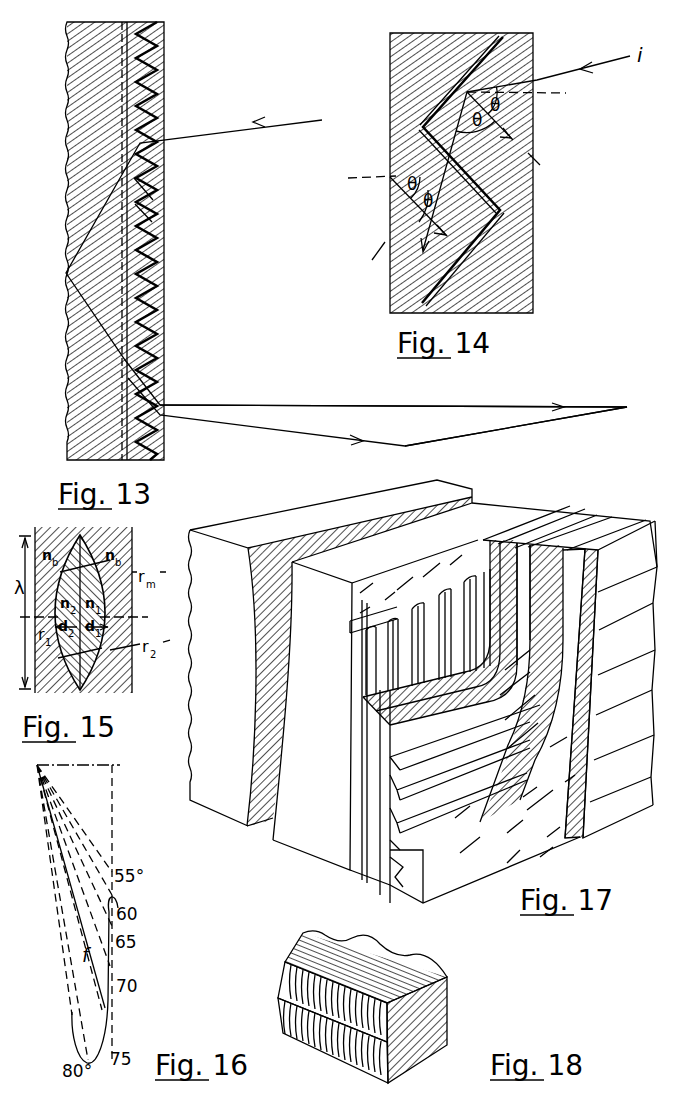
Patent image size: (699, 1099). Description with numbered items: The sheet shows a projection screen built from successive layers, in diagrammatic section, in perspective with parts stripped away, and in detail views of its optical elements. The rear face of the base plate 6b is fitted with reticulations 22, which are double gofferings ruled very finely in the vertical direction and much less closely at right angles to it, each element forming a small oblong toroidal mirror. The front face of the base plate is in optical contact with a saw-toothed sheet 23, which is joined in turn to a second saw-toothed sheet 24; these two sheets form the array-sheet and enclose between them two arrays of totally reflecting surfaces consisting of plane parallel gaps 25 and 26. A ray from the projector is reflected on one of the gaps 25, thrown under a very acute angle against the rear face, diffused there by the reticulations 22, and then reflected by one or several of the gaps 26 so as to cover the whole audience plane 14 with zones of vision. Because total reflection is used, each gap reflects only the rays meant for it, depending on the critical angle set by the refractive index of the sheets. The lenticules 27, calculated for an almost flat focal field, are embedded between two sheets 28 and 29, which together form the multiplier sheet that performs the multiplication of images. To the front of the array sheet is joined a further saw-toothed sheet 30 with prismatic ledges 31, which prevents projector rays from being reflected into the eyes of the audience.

In FIG. 13, the reticulations 22 is at (69, 172).
In FIG. 17, the reticulations 22 is at (302, 511).
In FIG. 18, the reticulations 22 is at (290, 973).
In FIG. 13, the saw-toothed sheet 23 is at (165, 30).
In FIG. 14, the saw-toothed sheet 23 is at (390, 58).
In FIG. 17, the saw-toothed sheet 23 is at (413, 870).
In FIG. 13, the second saw-toothed sheet 24 is at (158, 52).
In FIG. 14, the second saw-toothed sheet 24 is at (533, 293).
In FIG. 17, the second saw-toothed sheet 24 is at (418, 893).
In FIG. 13, the plane parallel gaps 25 is at (158, 185).
In FIG. 14, the plane parallel gaps 25 is at (466, 124).
In FIG. 13, the plane parallel gaps 26 is at (162, 250).
In FIG. 14, the plane parallel gaps 26 is at (465, 259).
In FIG. 13, the audience plane 14 is at (500, 432).
In FIG. 17, the base plate 6b is at (527, 503).
In FIG. 17, the lenticules 27 is at (587, 515).
In FIG. 17, the sheet 28 is at (570, 511).
In FIG. 17, the sheet 29 is at (607, 518).
In FIG. 17, the saw-toothed sheet 30 is at (650, 521).
In FIG. 17, the prismatic ledges 31 is at (645, 638).